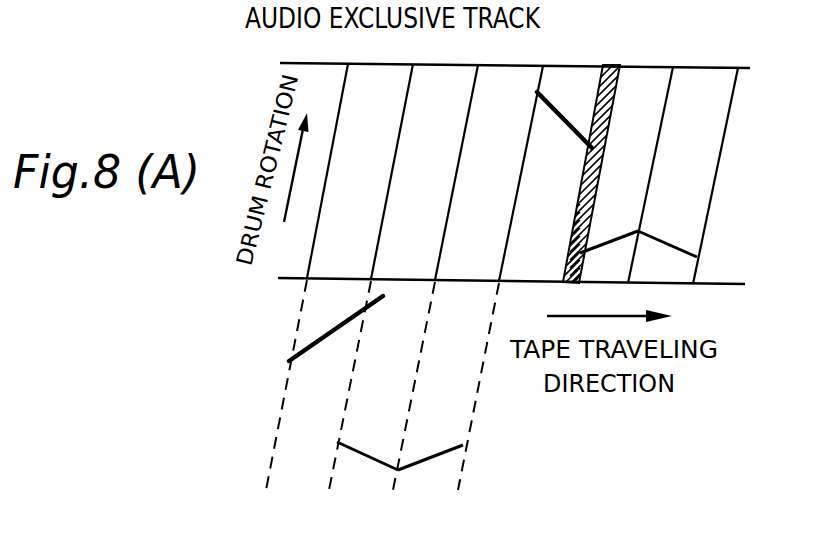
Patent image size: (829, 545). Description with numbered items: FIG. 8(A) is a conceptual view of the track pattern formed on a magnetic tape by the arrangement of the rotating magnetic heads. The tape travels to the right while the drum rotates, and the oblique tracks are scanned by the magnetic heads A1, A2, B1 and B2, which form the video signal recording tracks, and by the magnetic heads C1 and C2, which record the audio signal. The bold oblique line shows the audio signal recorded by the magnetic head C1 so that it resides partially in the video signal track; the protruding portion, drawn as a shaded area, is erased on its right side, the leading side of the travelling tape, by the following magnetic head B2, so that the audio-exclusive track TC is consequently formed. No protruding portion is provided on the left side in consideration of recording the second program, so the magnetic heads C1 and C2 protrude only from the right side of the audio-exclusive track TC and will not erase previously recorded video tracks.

The audio-exclusive track TC is at (591, 68).
The magnetic head C1 is at (576, 126).
The magnetic head C2 is at (320, 338).
The magnetic head A1 is at (669, 240).
The magnetic head A2 is at (432, 451).
The magnetic head B1 is at (370, 453).
The magnetic head B2 is at (609, 240).